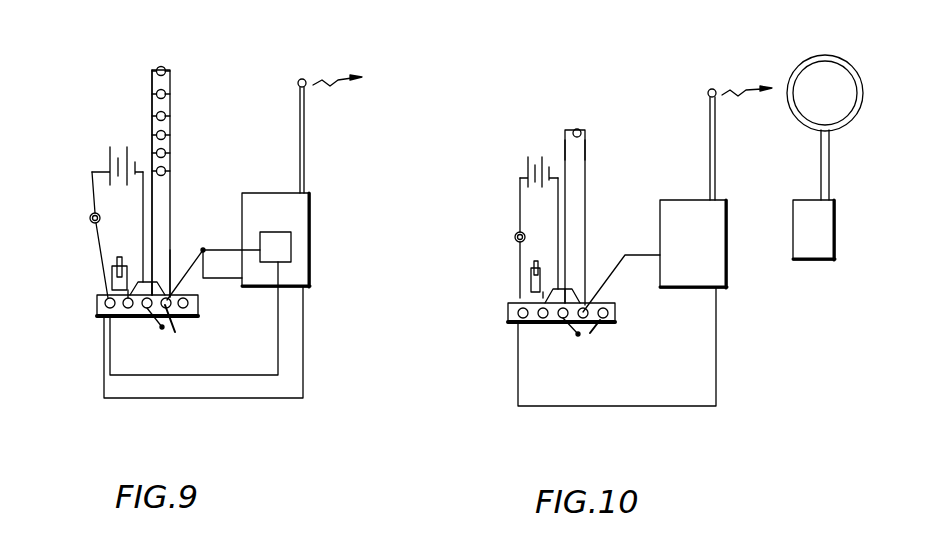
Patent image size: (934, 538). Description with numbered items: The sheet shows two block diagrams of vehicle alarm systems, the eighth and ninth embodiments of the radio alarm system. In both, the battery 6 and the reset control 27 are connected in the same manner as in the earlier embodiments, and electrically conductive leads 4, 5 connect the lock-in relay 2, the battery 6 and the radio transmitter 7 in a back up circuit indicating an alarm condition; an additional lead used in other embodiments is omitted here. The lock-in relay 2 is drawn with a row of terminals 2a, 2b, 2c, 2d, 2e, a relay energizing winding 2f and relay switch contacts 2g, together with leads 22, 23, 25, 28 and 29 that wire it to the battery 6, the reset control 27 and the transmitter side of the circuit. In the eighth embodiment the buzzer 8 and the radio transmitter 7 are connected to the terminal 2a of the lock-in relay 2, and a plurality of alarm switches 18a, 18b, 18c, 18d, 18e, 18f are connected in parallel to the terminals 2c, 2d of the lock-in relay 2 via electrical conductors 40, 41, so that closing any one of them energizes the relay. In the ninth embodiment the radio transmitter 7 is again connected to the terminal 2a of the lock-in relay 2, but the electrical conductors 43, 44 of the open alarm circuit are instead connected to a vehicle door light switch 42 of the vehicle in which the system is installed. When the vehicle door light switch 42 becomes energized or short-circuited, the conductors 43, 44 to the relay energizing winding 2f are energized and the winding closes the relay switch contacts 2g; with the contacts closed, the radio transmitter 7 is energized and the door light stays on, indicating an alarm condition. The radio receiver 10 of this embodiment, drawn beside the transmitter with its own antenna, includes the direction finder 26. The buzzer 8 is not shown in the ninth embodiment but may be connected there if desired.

In FIG. 9, the lock-in relay 2 is at (104, 340).
In FIG. 10, the lock-in relay 2 is at (615, 313).
In FIG. 9, the terminal of the lock-in relay 2a is at (104, 318).
In FIG. 10, the terminal of the lock-in relay 2a is at (518, 325).
In FIG. 9, the relay terminal 2b is at (128, 318).
In FIG. 10, the relay terminal 2b is at (543, 318).
In FIG. 9, the terminal of the lock-in relay 2c is at (140, 318).
In FIG. 10, the terminal of the lock-in relay 2c is at (563, 318).
In FIG. 9, the terminal of the lock-in relay 2d is at (188, 303).
In FIG. 10, the terminal of the lock-in relay 2d is at (592, 305).
In FIG. 9, the relay terminal 2e is at (199, 312).
In FIG. 10, the relay terminal 2e is at (607, 305).
In FIG. 9, the relay energizing winding 2f is at (112, 270).
In FIG. 10, the relay energizing winding 2f is at (530, 270).
In FIG. 9, the relay switch contacts 2g is at (172, 333).
In FIG. 10, the relay switch contacts 2g is at (582, 340).
In FIG. 9, the electrically conductive lead 4 is at (240, 283).
In FIG. 10, the electrically conductive lead 4 is at (645, 253).
In FIG. 9, the electrically conductive lead 5 is at (303, 395).
In FIG. 10, the electrically conductive lead 5 is at (716, 400).
In FIG. 9, the battery 6 is at (110, 147).
In FIG. 10, the battery 6 is at (528, 155).
In FIG. 9, the radio transmitter 7 is at (311, 288).
In FIG. 10, the radio transmitter 7 is at (727, 290).
In FIG. 9, the buzzer 8 is at (291, 247).
In FIG. 10, the radio receiver 10 is at (797, 250).
In FIG. 9, the alarm switch 18a is at (198, 60).
In FIG. 9, the alarm switch 18b is at (170, 90).
In FIG. 9, the alarm switch 18c is at (170, 113).
In FIG. 9, the alarm switch 18d is at (170, 133).
In FIG. 9, the alarm switch 18e is at (170, 150).
In FIG. 9, the alarm switch 18f is at (166, 174).
In FIG. 9, the relay contact lead 22 is at (150, 286).
In FIG. 10, the relay contact lead 22 is at (568, 292).
In FIG. 9, the buzzer lead 23 is at (202, 250).
In FIG. 9, the buzzer return line 25 is at (198, 375).
In FIG. 10, the direction finder 26 is at (885, 47).
In FIG. 9, the reset control 27 is at (92, 224).
In FIG. 10, the reset control 27 is at (513, 244).
In FIG. 9, the reset control lead 28 is at (100, 260).
In FIG. 10, the reset control lead 28 is at (519, 196).
In FIG. 9, the battery lead 29 is at (143, 238).
In FIG. 10, the battery lead 29 is at (558, 230).
In FIG. 9, the electrical conductor 40 is at (152, 98).
In FIG. 9, the electrical conductor 41 is at (171, 224).
In FIG. 10, the vehicle door light switch 42 is at (638, 108).
In FIG. 10, the electrical conductor 43 is at (565, 147).
In FIG. 10, the electrical conductor 44 is at (590, 152).